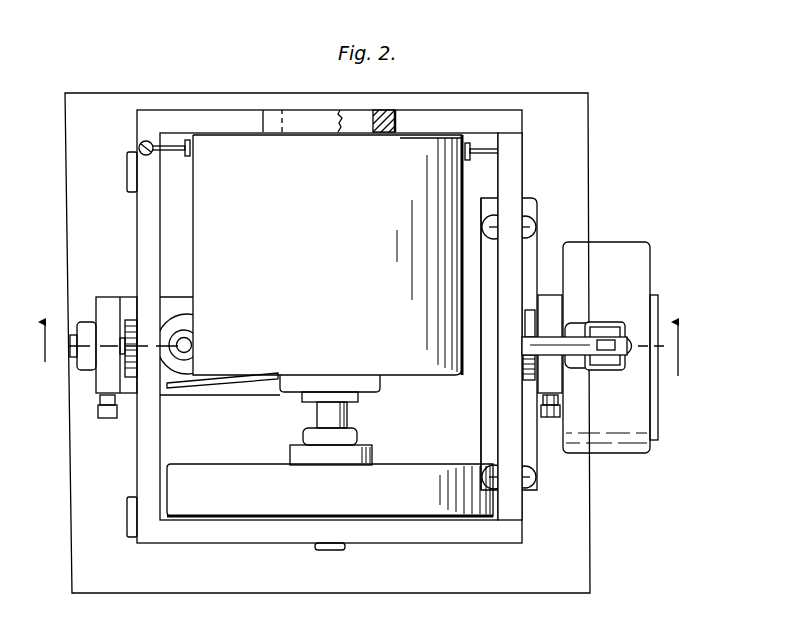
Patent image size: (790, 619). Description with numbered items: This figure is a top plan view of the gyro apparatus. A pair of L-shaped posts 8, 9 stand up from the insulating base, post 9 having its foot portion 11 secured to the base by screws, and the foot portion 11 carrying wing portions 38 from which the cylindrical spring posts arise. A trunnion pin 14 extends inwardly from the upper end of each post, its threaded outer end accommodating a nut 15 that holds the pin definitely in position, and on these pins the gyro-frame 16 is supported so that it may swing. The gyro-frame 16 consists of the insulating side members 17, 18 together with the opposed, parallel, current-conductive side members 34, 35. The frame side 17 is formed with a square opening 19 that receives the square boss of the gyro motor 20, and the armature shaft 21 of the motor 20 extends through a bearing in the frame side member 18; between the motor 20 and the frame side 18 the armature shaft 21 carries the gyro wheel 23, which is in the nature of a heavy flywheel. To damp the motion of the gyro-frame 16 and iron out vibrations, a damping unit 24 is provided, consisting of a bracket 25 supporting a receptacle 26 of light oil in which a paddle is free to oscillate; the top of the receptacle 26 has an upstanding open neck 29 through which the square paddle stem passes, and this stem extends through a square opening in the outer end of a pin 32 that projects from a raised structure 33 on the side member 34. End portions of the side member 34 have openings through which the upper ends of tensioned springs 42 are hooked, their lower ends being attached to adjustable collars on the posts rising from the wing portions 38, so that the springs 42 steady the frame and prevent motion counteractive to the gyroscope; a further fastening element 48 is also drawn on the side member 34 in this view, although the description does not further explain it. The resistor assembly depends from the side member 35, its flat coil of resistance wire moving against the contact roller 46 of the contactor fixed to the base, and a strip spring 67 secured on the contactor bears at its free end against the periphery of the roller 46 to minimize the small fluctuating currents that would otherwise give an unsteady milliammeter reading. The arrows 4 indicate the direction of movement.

The direction of movement arrows 4 is at (359, 352).
The L-shaped post 8 is at (100, 378).
The L-shaped post 9 is at (553, 311).
The foot portion 11 is at (481, 405).
The trunnion pin 14 is at (72, 344).
The nut 15 is at (603, 338).
The gyro-frame 16 is at (522, 150).
The frame side member 17 is at (440, 122).
The frame side member 18 is at (397, 541).
The square opening 19 is at (357, 118).
The gyro motor 20 is at (327, 255).
The armature shaft 21 is at (348, 420).
The gyro wheel 23 is at (330, 490).
The damping unit 24 is at (612, 246).
The bracket 25 is at (656, 305).
The receptacle 26 is at (636, 272).
The upstanding open neck 29 is at (616, 356).
The pin 32 is at (570, 362).
The raised structure 33 is at (515, 357).
The side member 34 is at (512, 183).
The side member 35 is at (143, 213).
The wing portions 38 is at (532, 245).
The tensioned spring 42 is at (538, 470).
The contact roller 46 is at (185, 384).
The screw 48 is at (517, 223).
The strip spring 67 is at (215, 384).